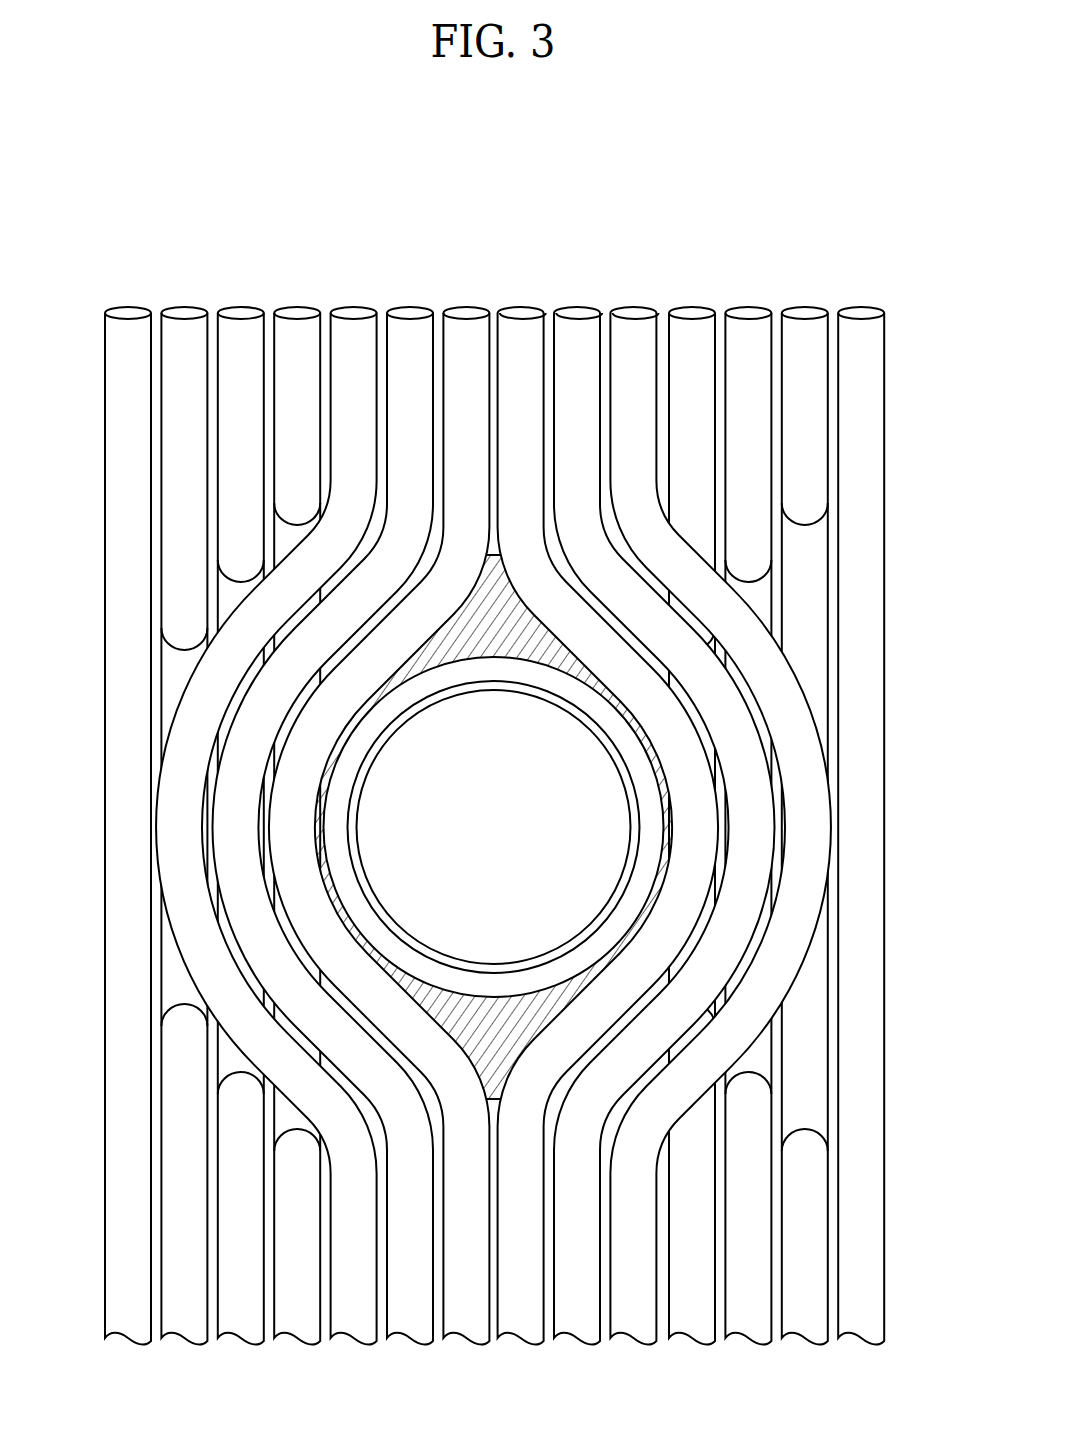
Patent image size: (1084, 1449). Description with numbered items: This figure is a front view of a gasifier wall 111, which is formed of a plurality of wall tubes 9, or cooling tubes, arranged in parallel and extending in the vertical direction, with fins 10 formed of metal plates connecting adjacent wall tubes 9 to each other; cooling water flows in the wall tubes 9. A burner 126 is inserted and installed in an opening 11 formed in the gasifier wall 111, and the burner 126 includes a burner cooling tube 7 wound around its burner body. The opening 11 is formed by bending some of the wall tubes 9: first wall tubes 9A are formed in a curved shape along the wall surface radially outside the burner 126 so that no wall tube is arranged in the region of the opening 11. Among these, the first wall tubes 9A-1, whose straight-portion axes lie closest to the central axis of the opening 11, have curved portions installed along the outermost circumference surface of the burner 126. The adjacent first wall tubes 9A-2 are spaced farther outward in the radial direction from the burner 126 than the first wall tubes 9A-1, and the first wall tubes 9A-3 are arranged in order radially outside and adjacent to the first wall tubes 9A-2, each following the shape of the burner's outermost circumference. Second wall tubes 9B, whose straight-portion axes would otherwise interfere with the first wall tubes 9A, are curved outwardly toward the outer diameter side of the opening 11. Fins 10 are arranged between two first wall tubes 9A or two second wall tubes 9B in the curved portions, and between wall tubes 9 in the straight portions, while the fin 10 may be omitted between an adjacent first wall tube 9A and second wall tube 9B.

The wall tube 9 is at (494, 741).
The first wall tube 9A is at (493, 826).
The first wall tube 9A-1 is at (493, 826).
The first wall tube 9A-2 is at (493, 826).
The first wall tube 9A-3 is at (493, 826).
The second wall tube 9B is at (494, 826).
The fin 10 is at (494, 406).
The opening 11 is at (640, 725).
The burner cooling tube 7 is at (638, 777).
The burner 126 is at (592, 857).
The gasifier wall 111 is at (896, 194).